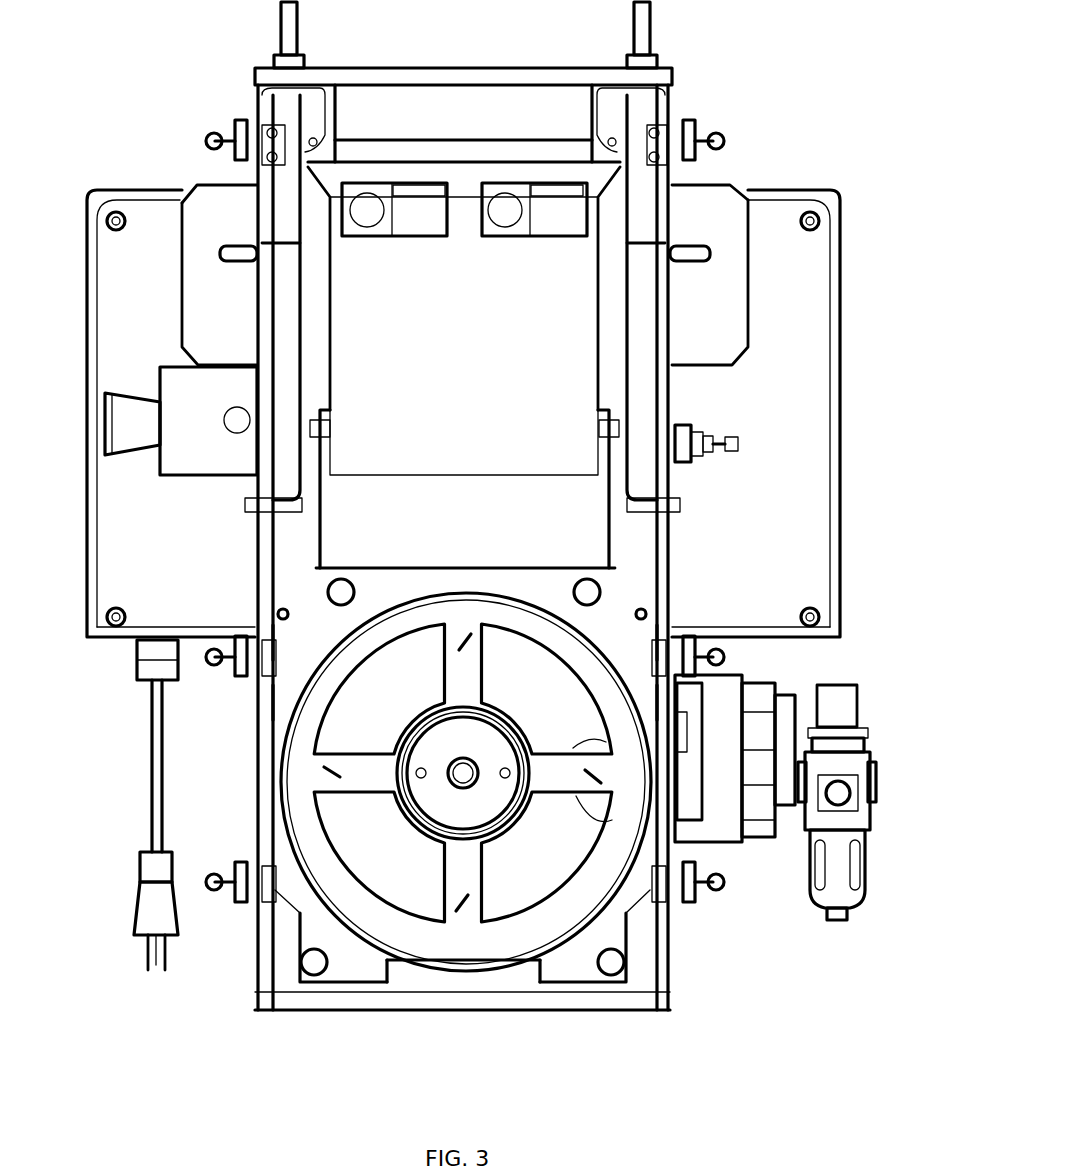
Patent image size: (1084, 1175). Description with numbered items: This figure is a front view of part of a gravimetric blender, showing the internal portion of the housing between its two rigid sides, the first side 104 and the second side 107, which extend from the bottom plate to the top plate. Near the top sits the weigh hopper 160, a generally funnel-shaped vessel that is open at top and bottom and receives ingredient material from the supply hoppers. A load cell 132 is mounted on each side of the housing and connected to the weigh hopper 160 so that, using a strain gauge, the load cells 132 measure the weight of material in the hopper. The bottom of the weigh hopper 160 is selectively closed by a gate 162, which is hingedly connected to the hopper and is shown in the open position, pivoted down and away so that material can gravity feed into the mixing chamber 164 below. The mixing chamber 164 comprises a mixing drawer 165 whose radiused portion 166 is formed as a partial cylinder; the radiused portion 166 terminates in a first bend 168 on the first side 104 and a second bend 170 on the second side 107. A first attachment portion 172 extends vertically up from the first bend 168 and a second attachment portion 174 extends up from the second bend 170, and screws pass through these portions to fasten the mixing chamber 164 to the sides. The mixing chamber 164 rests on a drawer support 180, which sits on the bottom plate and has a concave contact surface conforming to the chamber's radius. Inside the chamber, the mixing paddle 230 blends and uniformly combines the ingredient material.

The first side 104 is at (704, 964).
The second side 107 is at (222, 799).
The load cell 132 is at (720, 340).
The weigh hopper 160 is at (556, 312).
The gate 162 is at (556, 530).
The mixing chamber 164 is at (366, 588).
The mixing drawer 165 is at (316, 992).
The radiused portion 166 is at (585, 925).
The first bend 168 is at (643, 703).
The second bend 170 is at (275, 702).
The first attachment portion 172 is at (653, 642).
The second attachment portion 174 is at (274, 640).
The drawer support 180 is at (400, 975).
The mixing paddle 230 is at (540, 912).